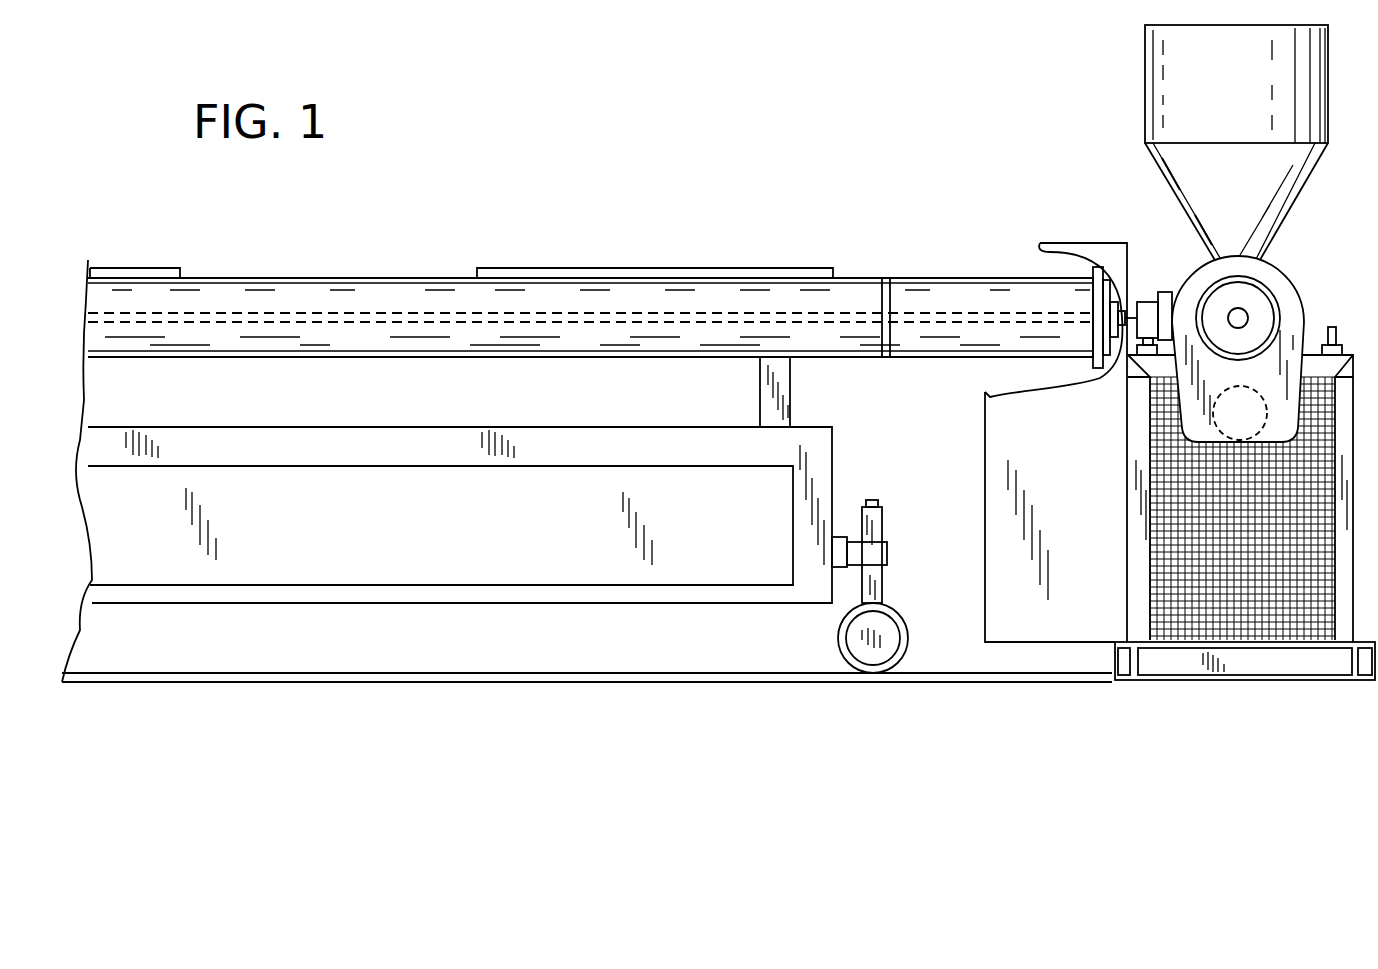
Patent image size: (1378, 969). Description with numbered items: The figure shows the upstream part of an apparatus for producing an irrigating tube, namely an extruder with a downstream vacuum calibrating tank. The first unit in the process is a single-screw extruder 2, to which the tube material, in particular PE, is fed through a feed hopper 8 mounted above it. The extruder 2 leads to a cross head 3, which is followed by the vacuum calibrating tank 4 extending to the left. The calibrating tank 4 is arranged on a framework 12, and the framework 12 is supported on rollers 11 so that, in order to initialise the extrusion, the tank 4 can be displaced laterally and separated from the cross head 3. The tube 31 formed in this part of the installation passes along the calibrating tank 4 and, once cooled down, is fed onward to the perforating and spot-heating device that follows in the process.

The single-screw extruder 2 is at (1252, 312).
The cross head 3 is at (1150, 302).
The vacuum calibrating tank 4 is at (952, 297).
The feed hopper 8 is at (1165, 95).
The rollers 11 is at (867, 657).
The framework 12 is at (462, 598).
The tube 31 is at (341, 315).